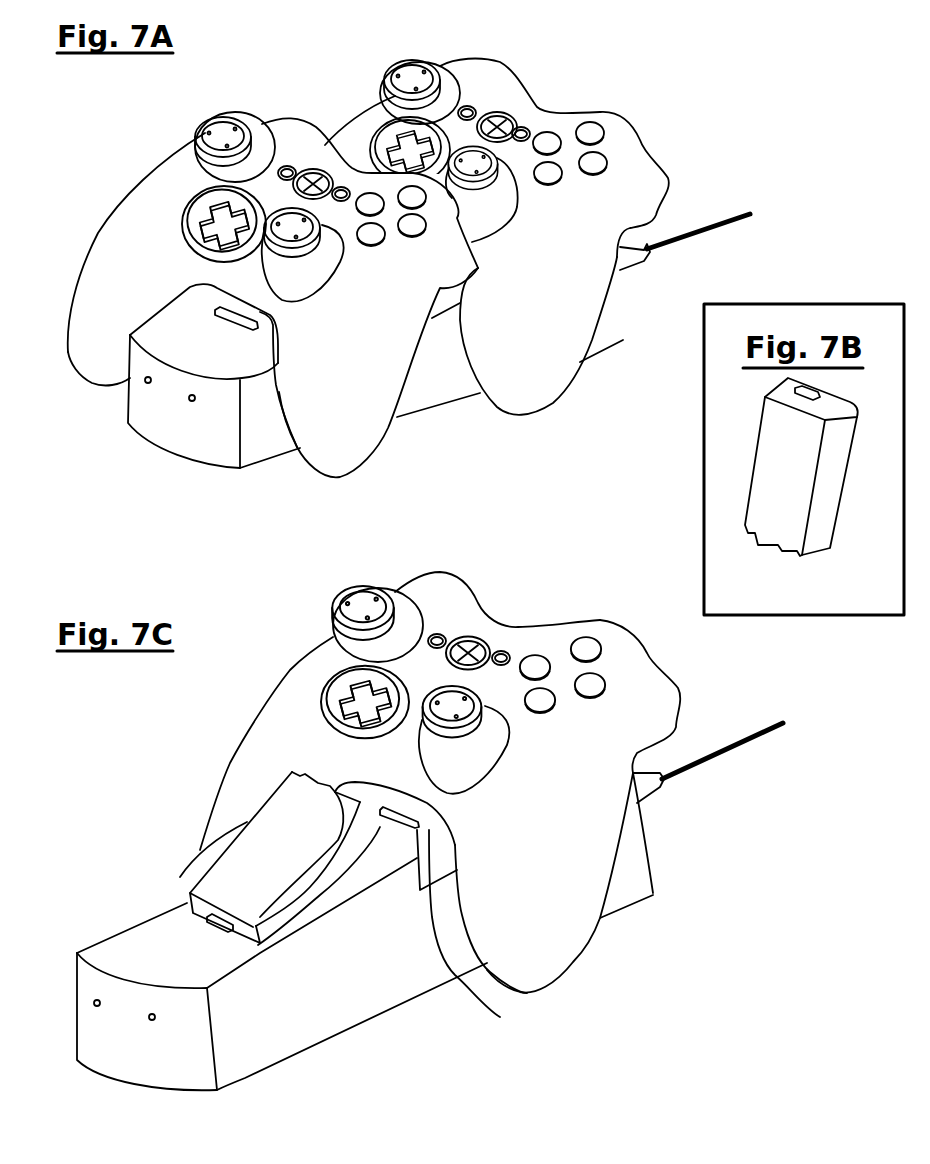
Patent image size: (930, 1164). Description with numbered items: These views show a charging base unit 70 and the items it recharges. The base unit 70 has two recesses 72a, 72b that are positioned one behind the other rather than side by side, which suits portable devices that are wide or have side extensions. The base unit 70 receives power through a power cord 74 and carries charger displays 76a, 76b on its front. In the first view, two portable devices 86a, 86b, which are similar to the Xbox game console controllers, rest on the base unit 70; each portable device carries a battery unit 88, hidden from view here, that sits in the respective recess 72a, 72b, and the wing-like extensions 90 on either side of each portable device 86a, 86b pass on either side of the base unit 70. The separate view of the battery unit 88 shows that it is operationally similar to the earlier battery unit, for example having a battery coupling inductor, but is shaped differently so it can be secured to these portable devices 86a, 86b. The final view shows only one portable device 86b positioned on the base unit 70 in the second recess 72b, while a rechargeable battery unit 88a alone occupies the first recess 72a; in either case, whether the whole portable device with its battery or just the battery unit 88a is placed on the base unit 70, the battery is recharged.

In FIG. 7A, the base unit 70 is at (292, 403).
In FIG. 7C, the base unit 70 is at (363, 936).
In FIG. 7A, the first recess 72a is at (263, 332).
In FIG. 7C, the first recess 72a is at (187, 900).
In FIG. 7C, the second recess 72b is at (500, 1017).
In FIG. 7A, the power cord 74 is at (652, 242).
In FIG. 7C, the power cord 74 is at (675, 772).
In FIG. 7A, the charger display 76a is at (146, 383).
In FIG. 7C, the charger display 76a is at (93, 1003).
In FIG. 7A, the charger display 76b is at (189, 401).
In FIG. 7C, the charger display 76b is at (148, 1018).
In FIG. 7A, the portable device 86a is at (288, 135).
In FIG. 7A, the portable device 86b is at (488, 92).
In FIG. 7C, the portable device 86b is at (448, 602).
In FIG. 7B, the battery unit 88 is at (780, 513).
In FIG. 7C, the rechargeable battery unit 88a is at (267, 882).
In FIG. 7A, the wing-like extension 90 is at (95, 265).
In FIG. 7C, the wing-like extension 90 is at (217, 813).